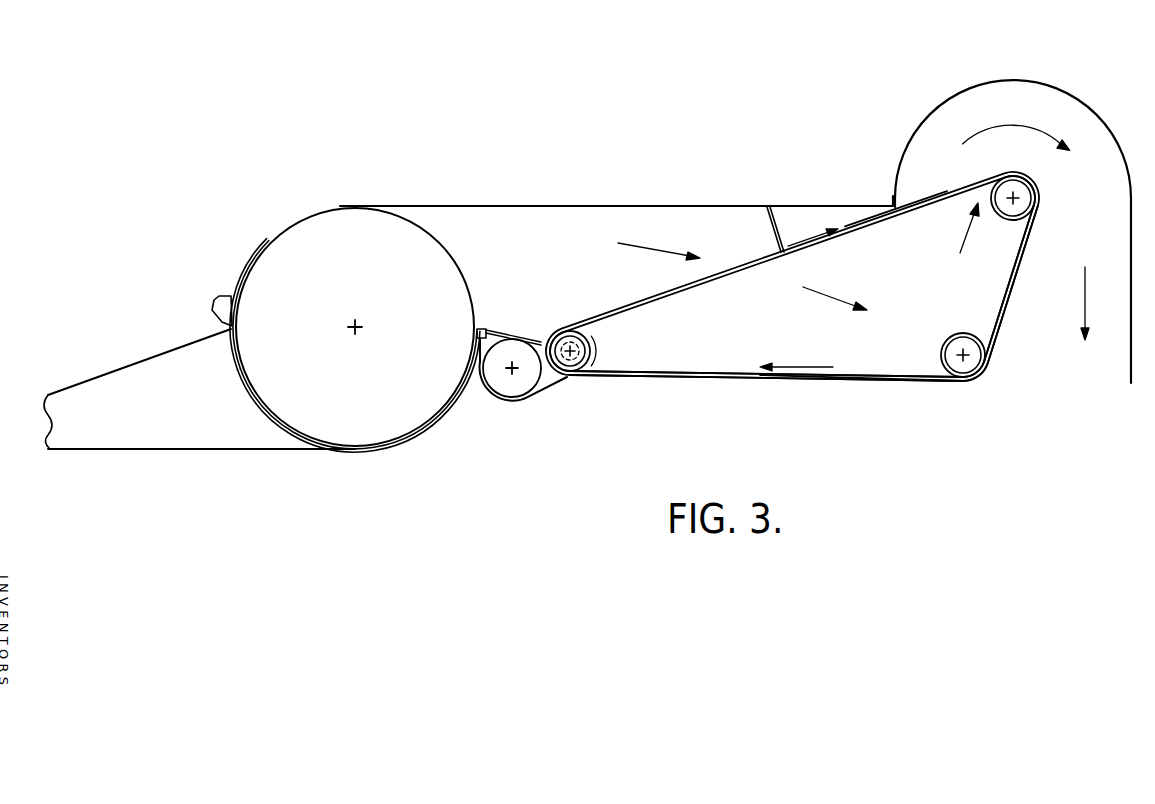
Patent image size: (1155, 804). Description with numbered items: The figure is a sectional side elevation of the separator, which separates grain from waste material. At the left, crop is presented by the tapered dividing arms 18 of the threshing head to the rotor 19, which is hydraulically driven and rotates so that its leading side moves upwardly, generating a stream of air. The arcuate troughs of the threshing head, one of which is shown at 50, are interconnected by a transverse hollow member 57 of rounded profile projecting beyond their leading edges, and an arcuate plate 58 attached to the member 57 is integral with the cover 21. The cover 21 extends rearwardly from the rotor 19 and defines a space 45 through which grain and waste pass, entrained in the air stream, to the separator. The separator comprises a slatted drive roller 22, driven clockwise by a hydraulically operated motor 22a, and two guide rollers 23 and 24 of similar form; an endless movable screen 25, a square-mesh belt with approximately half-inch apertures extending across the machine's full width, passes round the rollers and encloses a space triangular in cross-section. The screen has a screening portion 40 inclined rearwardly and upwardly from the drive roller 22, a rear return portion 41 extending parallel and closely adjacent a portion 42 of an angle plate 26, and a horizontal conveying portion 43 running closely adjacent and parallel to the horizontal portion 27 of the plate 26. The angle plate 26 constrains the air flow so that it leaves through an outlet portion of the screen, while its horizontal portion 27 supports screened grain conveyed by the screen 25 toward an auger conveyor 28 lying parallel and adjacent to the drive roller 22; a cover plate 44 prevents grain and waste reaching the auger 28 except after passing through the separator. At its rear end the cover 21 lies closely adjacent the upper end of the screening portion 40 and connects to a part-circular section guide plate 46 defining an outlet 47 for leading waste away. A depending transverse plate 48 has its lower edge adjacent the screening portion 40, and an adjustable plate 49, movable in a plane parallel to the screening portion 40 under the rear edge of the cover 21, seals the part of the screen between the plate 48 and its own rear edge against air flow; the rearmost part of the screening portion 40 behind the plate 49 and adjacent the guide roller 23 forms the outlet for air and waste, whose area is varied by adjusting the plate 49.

The tapered dividing arms 18 is at (152, 433).
The rotor 19 is at (428, 268).
The cover 21 is at (590, 205).
The drive roller 22 is at (598, 352).
The hydraulically operated motor 22a is at (574, 357).
The guide roller 23 is at (1036, 192).
The guide roller 24 is at (973, 349).
The endless movable screen 25 is at (706, 368).
The angle plate 26 is at (943, 386).
The horizontal portion 27 is at (832, 382).
The auger conveyor 28 is at (516, 388).
The screening portion 40 is at (740, 270).
The rear return portion 41 is at (1010, 272).
The portion of the angle plate 42 is at (1012, 297).
The horizontal conveying portion 43 is at (862, 372).
The cover plate 44 is at (501, 330).
The space 45 is at (618, 288).
The part-circular section guide plate 46 is at (925, 122).
The outlet 47 is at (1020, 123).
The depending transverse plate 48 is at (765, 222).
The adjustable plate 49 is at (933, 197).
The trough 50 is at (403, 441).
The transverse hollow member 57 is at (213, 300).
The arcuate plate 58 is at (267, 242).